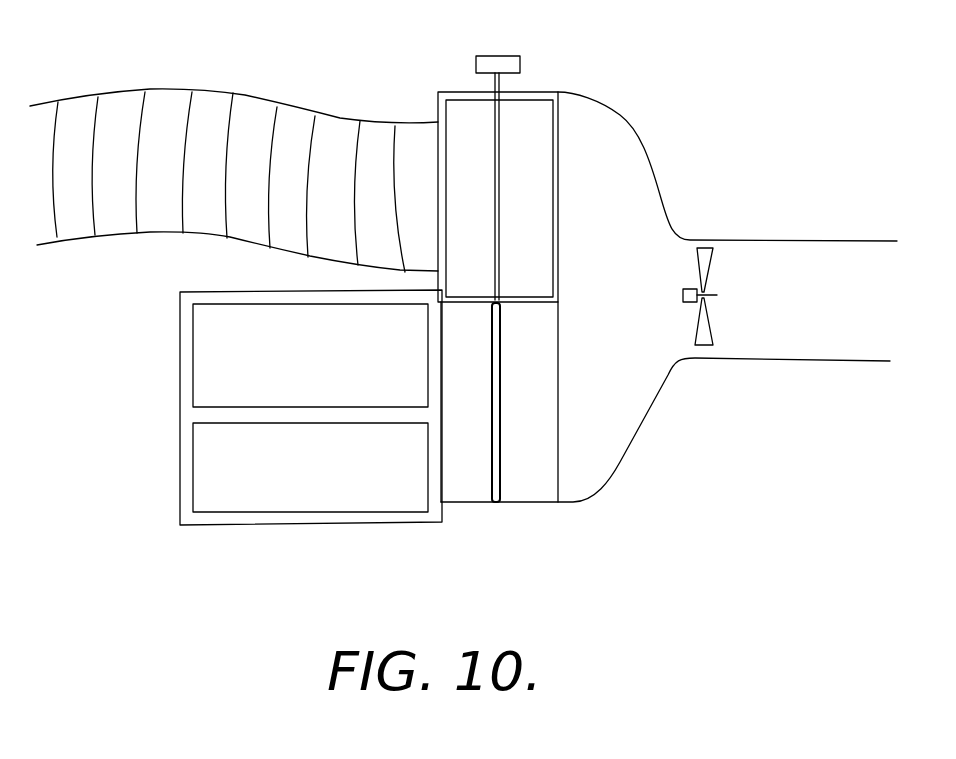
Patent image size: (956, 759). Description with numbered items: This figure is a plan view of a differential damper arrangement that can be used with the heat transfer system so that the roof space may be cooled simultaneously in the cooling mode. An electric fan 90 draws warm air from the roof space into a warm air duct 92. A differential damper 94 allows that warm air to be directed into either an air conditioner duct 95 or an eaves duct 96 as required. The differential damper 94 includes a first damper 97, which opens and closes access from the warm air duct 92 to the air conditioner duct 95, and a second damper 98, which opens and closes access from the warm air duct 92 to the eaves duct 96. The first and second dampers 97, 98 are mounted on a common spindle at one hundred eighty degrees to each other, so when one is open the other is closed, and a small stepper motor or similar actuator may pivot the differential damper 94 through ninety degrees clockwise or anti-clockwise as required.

The electric fan 90 is at (713, 260).
The warm air duct 92 is at (808, 363).
The differential damper 94 is at (620, 167).
The air conditioner duct 95 is at (180, 408).
The eaves duct 96 is at (245, 96).
The first damper 97 is at (500, 458).
The second damper 98 is at (518, 132).